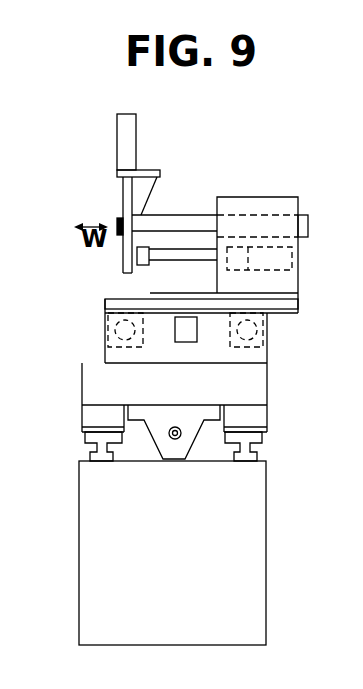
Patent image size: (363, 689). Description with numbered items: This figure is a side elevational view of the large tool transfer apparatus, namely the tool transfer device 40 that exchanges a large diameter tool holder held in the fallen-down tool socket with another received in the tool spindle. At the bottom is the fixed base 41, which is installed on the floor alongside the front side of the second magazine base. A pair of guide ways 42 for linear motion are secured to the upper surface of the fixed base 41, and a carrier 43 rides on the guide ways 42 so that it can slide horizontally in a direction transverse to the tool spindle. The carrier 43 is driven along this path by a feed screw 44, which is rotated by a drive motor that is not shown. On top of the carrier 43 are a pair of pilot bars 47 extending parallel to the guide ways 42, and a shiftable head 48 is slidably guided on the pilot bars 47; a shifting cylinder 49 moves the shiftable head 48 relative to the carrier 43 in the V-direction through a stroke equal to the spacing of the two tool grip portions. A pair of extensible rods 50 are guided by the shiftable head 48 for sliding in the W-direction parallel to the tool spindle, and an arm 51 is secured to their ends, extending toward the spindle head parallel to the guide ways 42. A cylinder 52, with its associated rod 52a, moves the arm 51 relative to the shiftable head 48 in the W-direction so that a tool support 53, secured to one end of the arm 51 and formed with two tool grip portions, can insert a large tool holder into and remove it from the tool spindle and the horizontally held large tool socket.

The tool transfer device 40 is at (232, 153).
The fixed base 41 is at (258, 537).
The guide ways 42 is at (101, 452).
The carrier 43 is at (258, 378).
The feed screw 44 is at (174, 440).
The pilot bars 47 is at (115, 330).
The shiftable head 48 is at (260, 205).
The shifting cylinder 49 is at (195, 330).
The extensible rods 50 is at (183, 222).
The arm 51 is at (130, 196).
The cylinder 52 is at (287, 258).
The feed rod 52a is at (183, 258).
The tool support 53 is at (130, 137).